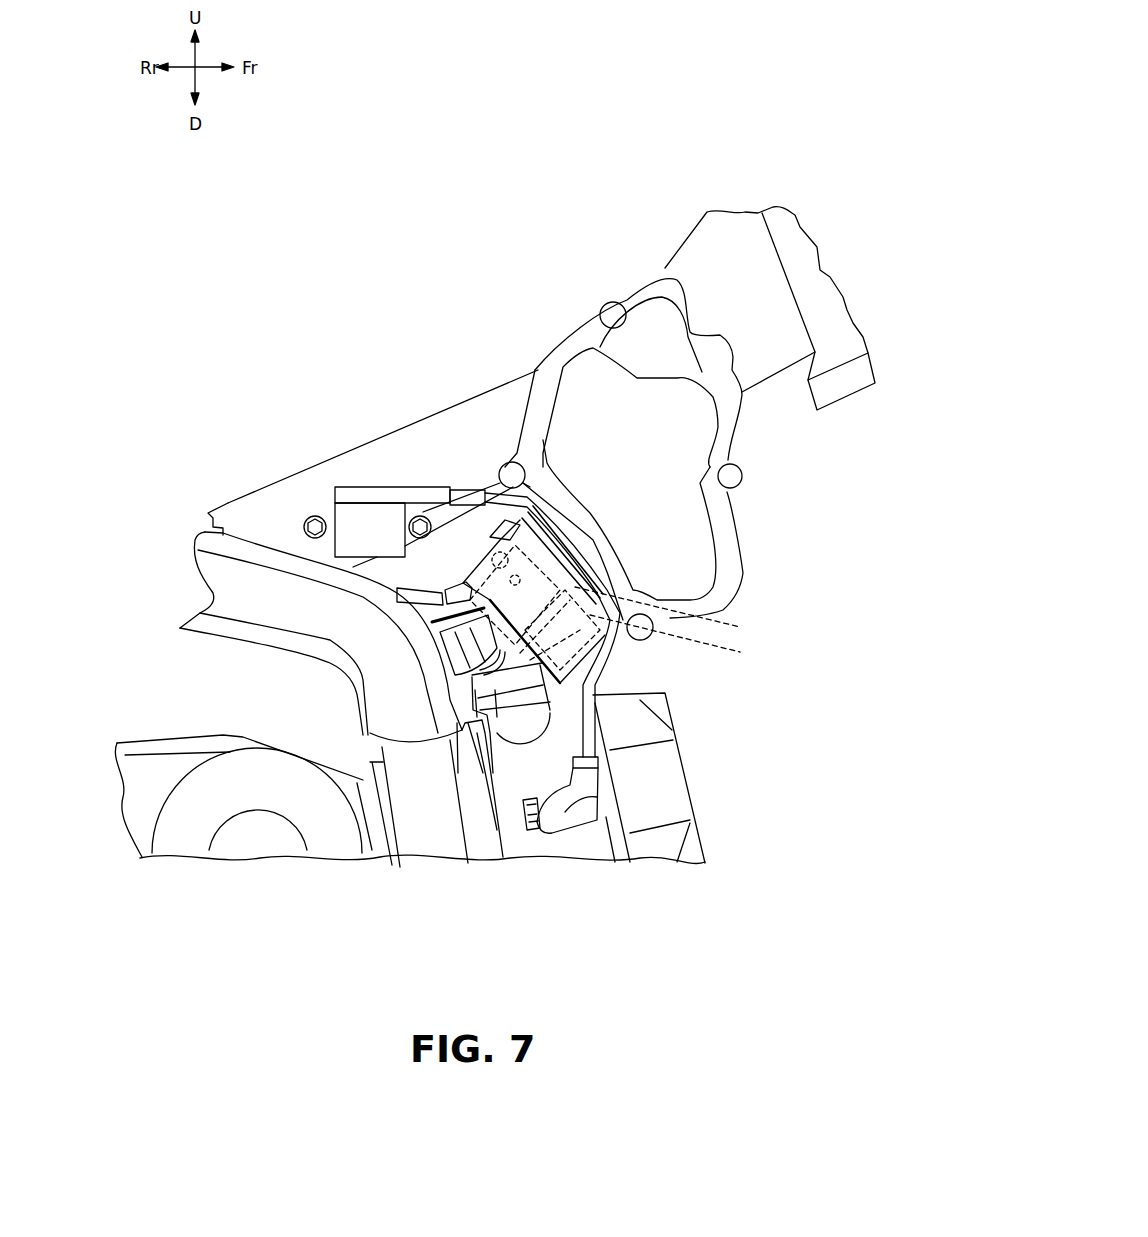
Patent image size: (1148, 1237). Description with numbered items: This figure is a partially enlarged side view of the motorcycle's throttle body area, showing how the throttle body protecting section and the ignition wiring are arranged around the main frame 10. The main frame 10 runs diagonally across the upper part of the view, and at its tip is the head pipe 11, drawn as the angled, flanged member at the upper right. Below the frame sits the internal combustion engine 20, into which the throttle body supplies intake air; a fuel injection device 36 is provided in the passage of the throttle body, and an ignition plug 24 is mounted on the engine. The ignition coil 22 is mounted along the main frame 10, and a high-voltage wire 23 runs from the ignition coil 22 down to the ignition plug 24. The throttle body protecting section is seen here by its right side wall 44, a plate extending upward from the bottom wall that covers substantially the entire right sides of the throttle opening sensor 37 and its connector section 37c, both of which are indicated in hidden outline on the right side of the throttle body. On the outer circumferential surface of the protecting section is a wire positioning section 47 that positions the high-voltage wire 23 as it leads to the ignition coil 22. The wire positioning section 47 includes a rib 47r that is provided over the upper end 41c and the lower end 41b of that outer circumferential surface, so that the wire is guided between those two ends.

The main frame 10 is at (454, 410).
The head pipe 11 is at (800, 243).
The internal combustion engine 20 is at (683, 785).
The ignition coil 22 is at (368, 518).
The high-voltage wire 23 is at (562, 527).
The ignition plug 24 is at (538, 832).
The fuel injection device 36 is at (442, 612).
The throttle opening sensor 37 is at (672, 613).
The connector section 37c is at (686, 640).
The lower end 41b is at (655, 572).
The upper end 41c is at (546, 489).
The right side wall 44 is at (570, 660).
The wire positioning section 47 is at (581, 581).
The rib 47r is at (551, 604).